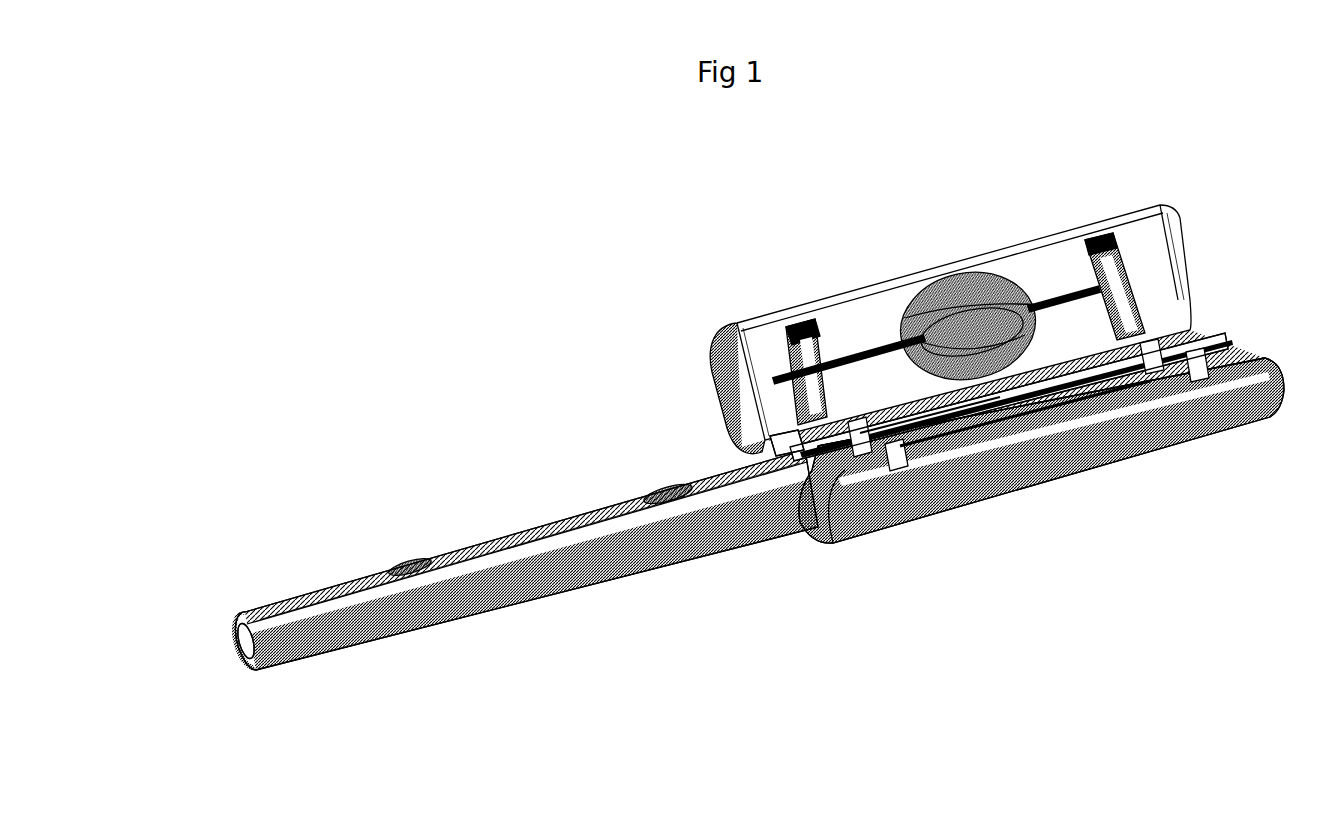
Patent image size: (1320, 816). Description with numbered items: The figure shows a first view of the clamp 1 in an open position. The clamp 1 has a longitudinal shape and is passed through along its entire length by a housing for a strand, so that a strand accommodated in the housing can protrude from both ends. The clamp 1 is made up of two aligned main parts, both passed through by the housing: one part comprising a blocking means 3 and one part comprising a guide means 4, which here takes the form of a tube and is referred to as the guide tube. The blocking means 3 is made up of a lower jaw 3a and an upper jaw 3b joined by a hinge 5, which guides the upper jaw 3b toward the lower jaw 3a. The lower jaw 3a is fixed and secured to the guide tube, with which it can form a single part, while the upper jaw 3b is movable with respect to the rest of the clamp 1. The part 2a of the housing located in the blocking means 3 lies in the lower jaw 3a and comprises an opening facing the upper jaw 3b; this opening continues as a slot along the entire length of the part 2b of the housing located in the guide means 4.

The clamp 1 is at (448, 272).
The part of the housing located in the blocking means 2a is at (985, 415).
The part of the housing located in the guide tube 2b is at (243, 628).
The blocking means 3 is at (997, 413).
The lower jaw 3a is at (1058, 447).
The upper jaw 3b is at (953, 300).
The guide means 4 is at (806, 556).
The hinge 5 is at (785, 441).